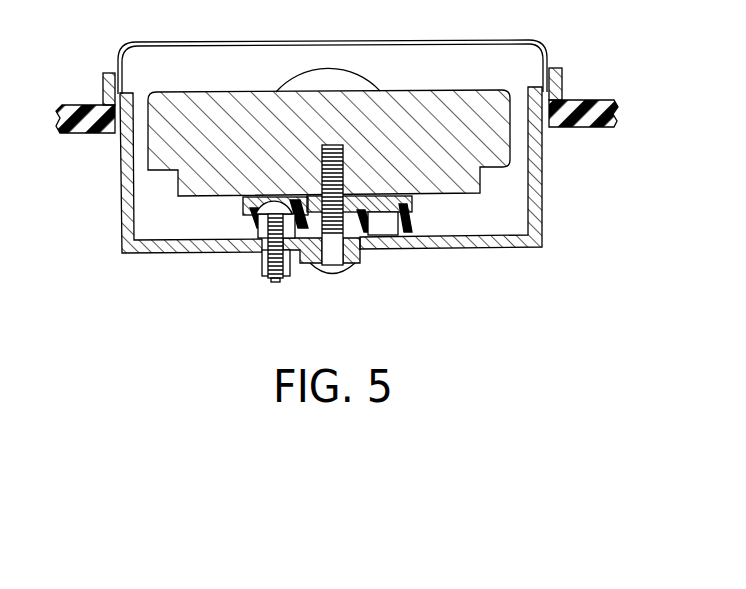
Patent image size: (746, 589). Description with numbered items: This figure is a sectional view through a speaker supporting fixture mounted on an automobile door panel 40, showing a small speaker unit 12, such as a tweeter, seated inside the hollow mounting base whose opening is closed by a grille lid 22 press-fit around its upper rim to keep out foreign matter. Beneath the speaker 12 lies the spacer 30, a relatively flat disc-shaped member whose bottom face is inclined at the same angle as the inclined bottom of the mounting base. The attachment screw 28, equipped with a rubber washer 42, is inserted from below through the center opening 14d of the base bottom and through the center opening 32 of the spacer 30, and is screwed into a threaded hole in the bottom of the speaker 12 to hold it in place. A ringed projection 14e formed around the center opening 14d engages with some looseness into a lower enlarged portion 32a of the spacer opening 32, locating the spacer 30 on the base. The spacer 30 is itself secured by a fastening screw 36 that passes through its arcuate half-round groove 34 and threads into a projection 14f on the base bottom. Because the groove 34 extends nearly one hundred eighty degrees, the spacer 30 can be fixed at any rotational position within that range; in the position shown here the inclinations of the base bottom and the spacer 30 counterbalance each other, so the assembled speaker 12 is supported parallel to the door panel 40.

The speaker unit 12 is at (440, 100).
The grille lid 22 is at (415, 42).
The door panel 40 is at (572, 100).
The attachment screw 28 is at (332, 265).
The rubber washer 42 is at (368, 264).
The spacer 30 is at (412, 220).
The center opening 32 is at (237, 200).
The lower enlarged portion 32a is at (250, 222).
The half-round groove 34 is at (387, 233).
The fastening screw 36 is at (276, 282).
The center opening 14d is at (312, 252).
The ringed projection 14e is at (366, 248).
The projection 14f is at (257, 253).